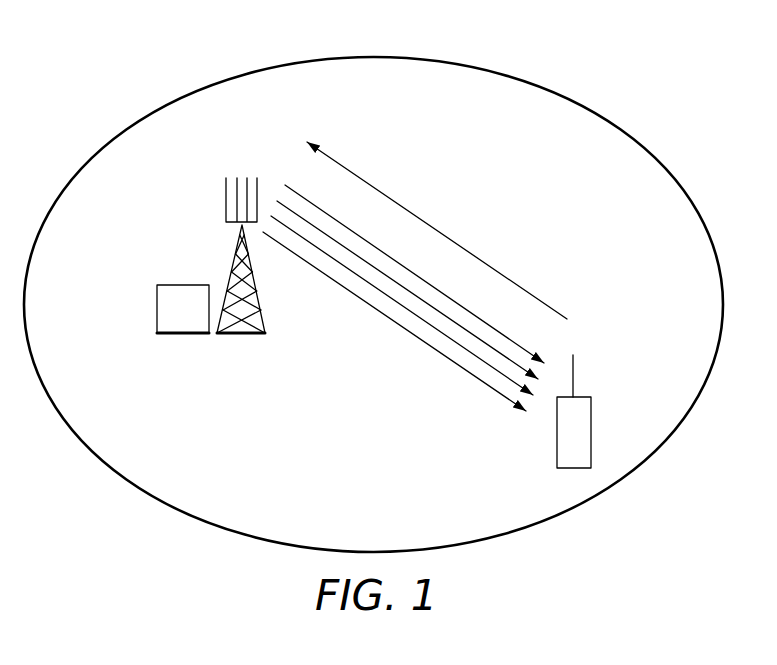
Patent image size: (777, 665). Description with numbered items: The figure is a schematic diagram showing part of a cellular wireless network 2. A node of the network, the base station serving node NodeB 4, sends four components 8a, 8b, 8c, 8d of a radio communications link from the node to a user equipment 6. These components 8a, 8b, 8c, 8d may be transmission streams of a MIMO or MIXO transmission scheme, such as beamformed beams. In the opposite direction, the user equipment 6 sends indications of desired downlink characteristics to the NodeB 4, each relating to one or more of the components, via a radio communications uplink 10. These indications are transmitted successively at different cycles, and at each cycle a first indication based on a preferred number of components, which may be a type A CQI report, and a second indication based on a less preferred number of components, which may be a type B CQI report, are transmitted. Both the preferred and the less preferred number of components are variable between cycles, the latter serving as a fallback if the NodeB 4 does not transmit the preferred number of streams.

The cellular wireless network 2 is at (372, 57).
The base station serving node NodeB 4 is at (226, 190).
The user equipment 6 is at (591, 406).
The component 8a is at (370, 245).
The component 8b is at (390, 280).
The component 8c is at (410, 313).
The component 8d is at (428, 345).
The radio communications uplink 10 is at (458, 242).